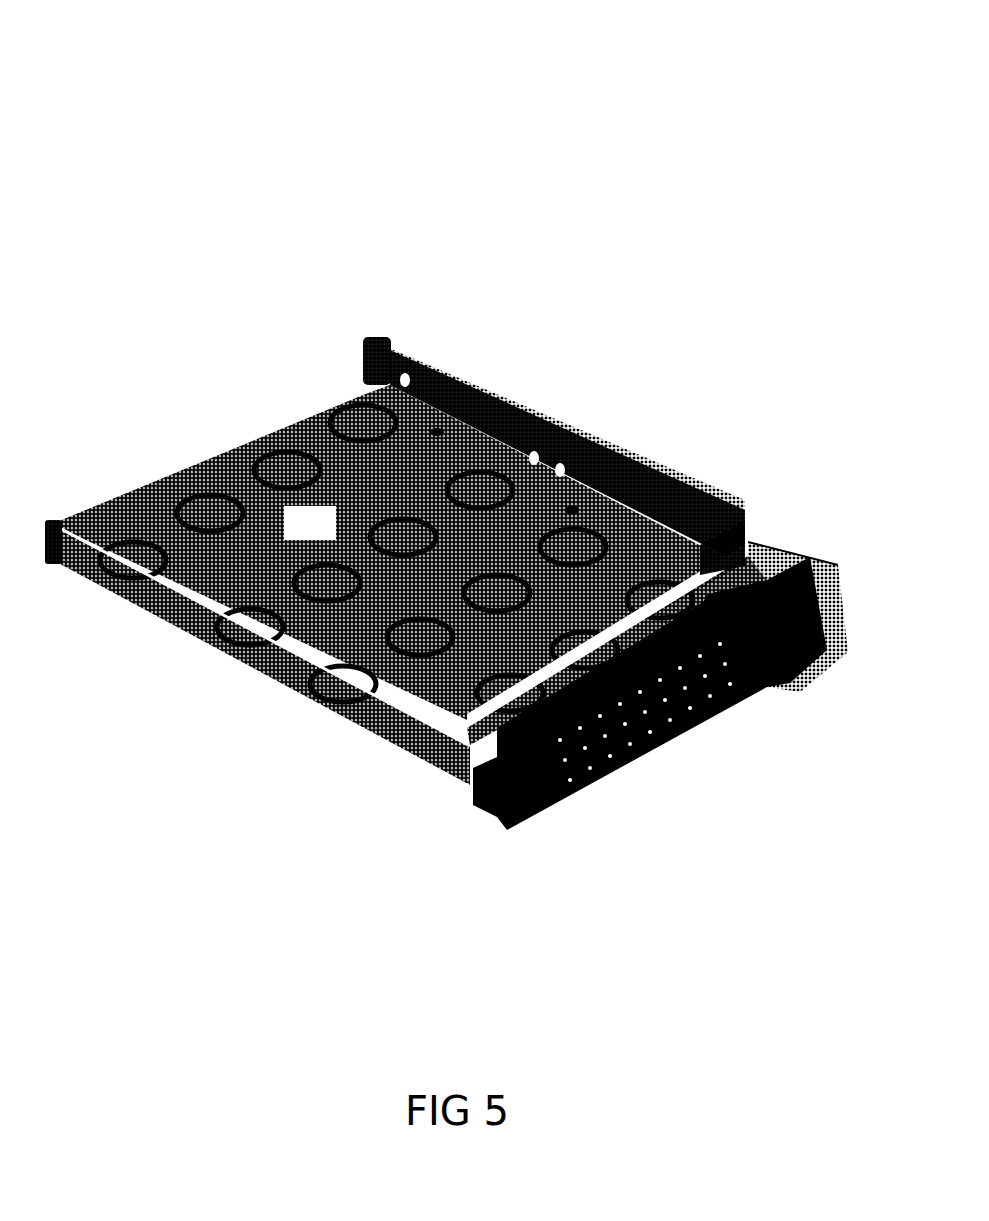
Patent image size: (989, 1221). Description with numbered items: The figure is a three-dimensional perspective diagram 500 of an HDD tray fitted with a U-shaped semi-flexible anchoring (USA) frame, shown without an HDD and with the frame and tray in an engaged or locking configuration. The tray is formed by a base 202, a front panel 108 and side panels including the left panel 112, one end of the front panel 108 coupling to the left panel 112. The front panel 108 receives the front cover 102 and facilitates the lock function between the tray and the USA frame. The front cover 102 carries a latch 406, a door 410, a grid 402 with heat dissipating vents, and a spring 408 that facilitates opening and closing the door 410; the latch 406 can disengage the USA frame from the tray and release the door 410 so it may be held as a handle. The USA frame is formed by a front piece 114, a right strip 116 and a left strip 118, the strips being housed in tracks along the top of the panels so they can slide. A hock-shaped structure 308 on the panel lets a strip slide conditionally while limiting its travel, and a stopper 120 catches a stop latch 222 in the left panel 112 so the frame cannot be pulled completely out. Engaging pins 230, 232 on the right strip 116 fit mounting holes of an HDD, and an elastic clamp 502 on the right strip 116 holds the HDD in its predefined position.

The 3D perspective diagram 500 is at (222, 70).
The front cover 102 is at (795, 548).
The front panel 108 is at (757, 530).
The left panel 112 is at (268, 675).
The front piece 114 is at (612, 614).
The right strip 116 is at (465, 418).
The left strip 118 is at (57, 522).
The stopper 120 is at (700, 553).
The base 202 is at (332, 536).
The stop latch 222 is at (103, 585).
The engaging pin 230 is at (405, 380).
The engaging pin 232 is at (534, 458).
The hock-shaped structure 308 is at (386, 337).
The grid 402 is at (640, 773).
The latch 406 is at (822, 638).
The spring 408 is at (535, 713).
The door 410 is at (712, 705).
The elastic clamp 502 is at (560, 470).